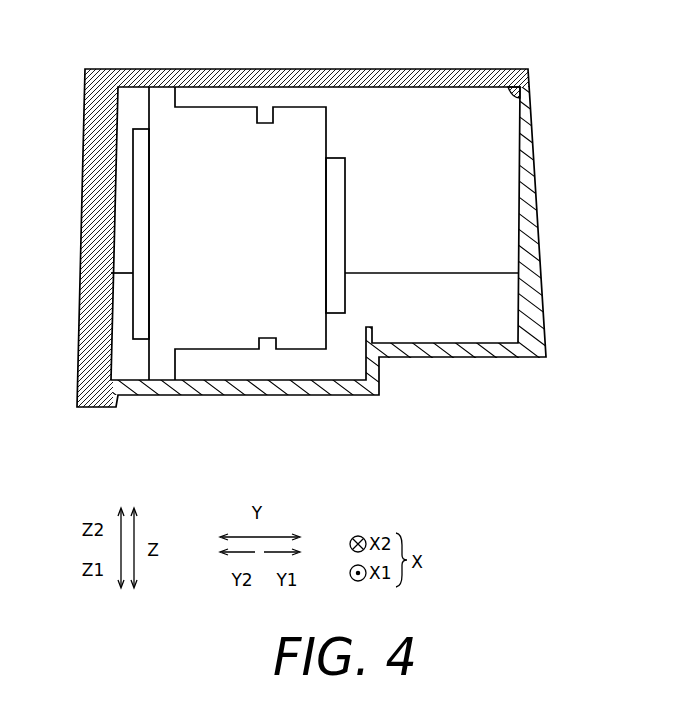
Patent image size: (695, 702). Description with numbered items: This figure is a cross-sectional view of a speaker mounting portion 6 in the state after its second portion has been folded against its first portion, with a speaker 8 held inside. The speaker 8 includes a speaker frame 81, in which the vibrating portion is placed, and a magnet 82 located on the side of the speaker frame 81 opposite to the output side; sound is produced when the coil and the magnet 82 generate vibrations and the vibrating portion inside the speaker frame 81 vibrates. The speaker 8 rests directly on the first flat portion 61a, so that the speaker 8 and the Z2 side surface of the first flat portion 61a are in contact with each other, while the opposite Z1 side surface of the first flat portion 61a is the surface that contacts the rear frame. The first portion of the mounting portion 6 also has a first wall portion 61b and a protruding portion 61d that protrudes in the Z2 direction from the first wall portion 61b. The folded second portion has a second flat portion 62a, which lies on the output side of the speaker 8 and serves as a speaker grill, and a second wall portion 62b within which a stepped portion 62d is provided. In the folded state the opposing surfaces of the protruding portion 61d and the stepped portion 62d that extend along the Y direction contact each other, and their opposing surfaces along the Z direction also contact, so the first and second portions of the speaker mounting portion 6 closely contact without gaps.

The speaker mounting portion 6 is at (553, 72).
The speaker 8 is at (358, 148).
The speaker frame 81 is at (150, 105).
The magnet 82 is at (347, 205).
The first flat portion 61a is at (360, 395).
The first wall portion 61b is at (397, 272).
The protruding portion 61d is at (537, 210).
The second flat portion 62a is at (82, 185).
The second wall portion 62b is at (443, 69).
The stepped portion 62d is at (508, 97).